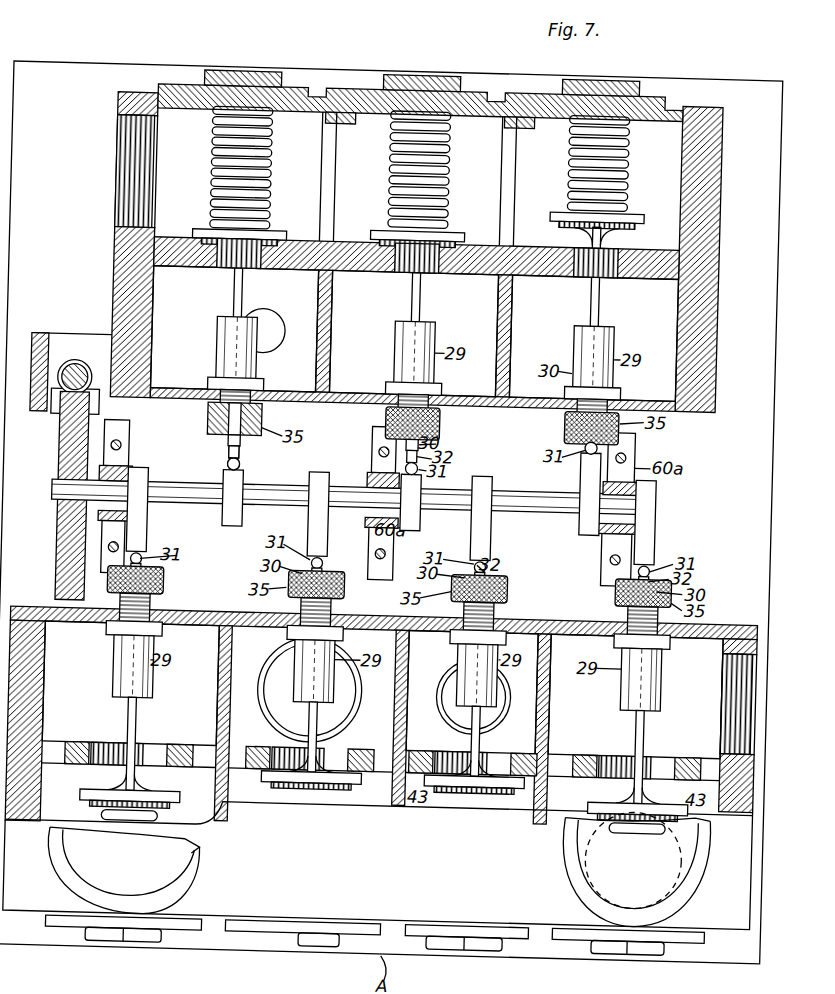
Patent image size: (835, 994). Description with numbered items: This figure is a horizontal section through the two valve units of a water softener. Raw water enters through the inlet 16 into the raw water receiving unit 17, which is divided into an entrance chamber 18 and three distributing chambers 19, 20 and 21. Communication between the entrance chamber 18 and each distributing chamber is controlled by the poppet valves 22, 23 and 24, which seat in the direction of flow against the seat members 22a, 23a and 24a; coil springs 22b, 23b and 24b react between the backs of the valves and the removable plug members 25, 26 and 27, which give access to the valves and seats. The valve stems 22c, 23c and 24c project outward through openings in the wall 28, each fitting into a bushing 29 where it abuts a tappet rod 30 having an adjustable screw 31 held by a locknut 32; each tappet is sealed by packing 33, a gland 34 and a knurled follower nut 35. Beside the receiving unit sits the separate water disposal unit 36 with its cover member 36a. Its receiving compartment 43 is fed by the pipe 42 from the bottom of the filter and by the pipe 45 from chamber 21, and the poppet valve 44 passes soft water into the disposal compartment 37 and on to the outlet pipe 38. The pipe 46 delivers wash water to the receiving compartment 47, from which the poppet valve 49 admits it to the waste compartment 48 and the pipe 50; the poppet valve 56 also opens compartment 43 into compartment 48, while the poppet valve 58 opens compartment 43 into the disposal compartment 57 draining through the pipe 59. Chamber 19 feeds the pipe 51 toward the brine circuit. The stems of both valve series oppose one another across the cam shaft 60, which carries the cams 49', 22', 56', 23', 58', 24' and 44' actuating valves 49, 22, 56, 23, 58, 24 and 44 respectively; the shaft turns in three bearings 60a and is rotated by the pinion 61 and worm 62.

The inlet 16 is at (119, 126).
The raw water receiving unit 17 is at (320, 80).
The entrance or receiving chamber 18 is at (417, 179).
The distributing chamber 19 is at (235, 329).
The distributing chamber 20 is at (413, 333).
The distributing chamber 21 is at (593, 338).
The poppet valve 22 is at (246, 232).
The seat member 22a is at (170, 263).
The coil spring 22b is at (274, 130).
The valve stem 22c is at (249, 276).
The poppet valve 23 is at (425, 237).
The seat member 23a is at (458, 262).
The coil spring 23b is at (453, 134).
The valve stem 23c is at (427, 294).
The poppet valve 24 is at (606, 218).
The seat member 24a is at (638, 262).
The coil spring 24b is at (632, 139).
The valve stem 24c is at (606, 294).
The removable plug member 25 is at (246, 65).
The removable plug member 26 is at (434, 65).
The removable plug member 27 is at (619, 65).
The wall 28 is at (511, 396).
The bushing 29 is at (264, 363).
The tappet rod 30 is at (251, 434).
The screw 31 is at (238, 458).
The locknut 32 is at (249, 447).
The packing 33 is at (228, 396).
The gland 34 is at (217, 413).
The knurled follower nut 35 is at (449, 410).
The water disposal unit 36 is at (560, 606).
The cover member 36a is at (238, 925).
The disposal compartment 37 is at (635, 696).
The outlet pipe 38 is at (740, 682).
The pipe 42 is at (582, 830).
The receiving compartment 43 is at (225, 785).
The poppet valve 44 is at (634, 781).
The cam 44' is at (665, 523).
The pipe 45 is at (636, 860).
The pipe 46 is at (123, 871).
The receiving compartment 47 is at (100, 809).
The disposal compartment 48 is at (130, 683).
The poppet valve 49 is at (114, 790).
The cam 49' is at (151, 509).
The pipe 50 is at (376, 682).
The pipe 51 is at (291, 321).
The poppet valve 56 is at (320, 782).
The cam 56' is at (297, 514).
The disposal compartment 57 is at (472, 692).
The poppet valve 58 is at (476, 784).
The cam 58' is at (505, 519).
The pipe 59 is at (456, 684).
The cam shaft 60 is at (63, 490).
The bearing 60a is at (139, 447).
The pinion 61 is at (69, 549).
The worm 62 is at (86, 358).
The cam 22' is at (233, 513).
The cam 23' is at (417, 512).
The cam 24' is at (577, 505).